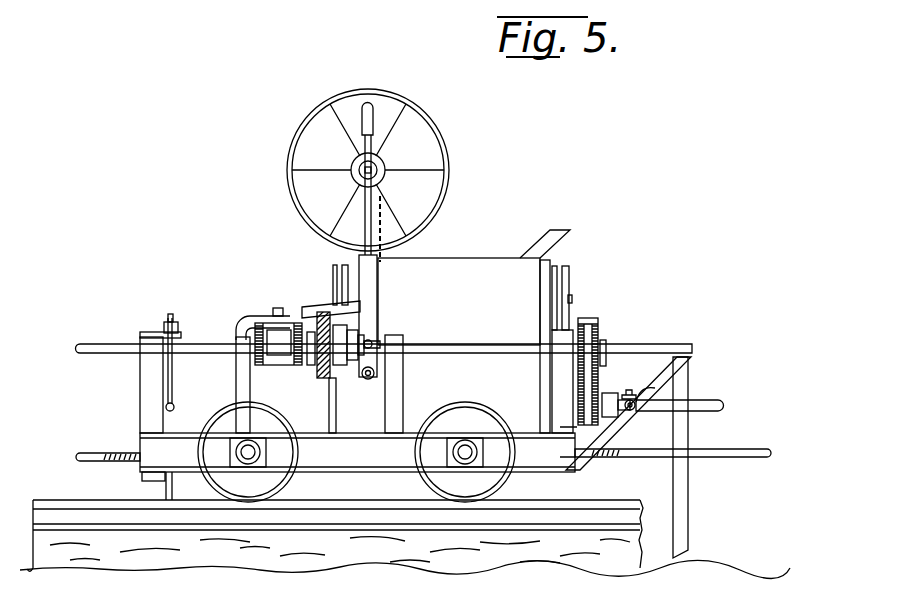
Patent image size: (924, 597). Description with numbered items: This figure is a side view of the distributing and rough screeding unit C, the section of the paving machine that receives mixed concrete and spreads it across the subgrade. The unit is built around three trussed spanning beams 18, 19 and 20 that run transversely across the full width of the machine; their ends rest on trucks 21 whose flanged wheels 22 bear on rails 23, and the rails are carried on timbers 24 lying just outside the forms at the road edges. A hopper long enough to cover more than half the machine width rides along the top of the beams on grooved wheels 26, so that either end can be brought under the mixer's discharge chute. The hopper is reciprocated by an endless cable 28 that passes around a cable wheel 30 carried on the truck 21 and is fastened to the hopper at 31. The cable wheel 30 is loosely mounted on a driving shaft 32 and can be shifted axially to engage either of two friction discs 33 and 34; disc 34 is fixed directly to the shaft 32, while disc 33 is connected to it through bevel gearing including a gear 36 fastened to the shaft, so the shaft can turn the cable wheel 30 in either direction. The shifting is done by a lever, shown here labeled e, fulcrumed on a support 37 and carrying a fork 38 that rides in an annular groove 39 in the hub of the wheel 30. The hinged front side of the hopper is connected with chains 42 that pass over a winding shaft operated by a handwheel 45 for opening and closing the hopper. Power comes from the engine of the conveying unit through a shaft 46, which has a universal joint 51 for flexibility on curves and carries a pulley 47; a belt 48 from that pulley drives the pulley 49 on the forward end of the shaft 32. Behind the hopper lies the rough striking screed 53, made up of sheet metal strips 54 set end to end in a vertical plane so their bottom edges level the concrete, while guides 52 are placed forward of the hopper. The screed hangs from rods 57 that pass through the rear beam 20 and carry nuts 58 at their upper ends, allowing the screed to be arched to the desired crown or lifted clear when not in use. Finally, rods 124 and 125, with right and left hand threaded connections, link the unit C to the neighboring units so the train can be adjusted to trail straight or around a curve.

The trussed spanning beam 18 is at (550, 381).
The middle trussed spanning beam 19 is at (334, 404).
The rear trussed spanning beam 20 is at (140, 390).
The truck 21 is at (330, 272).
The flanged wheel 22 is at (356, 452).
The rail 23 is at (343, 506).
The timber 24 is at (545, 540).
The grooved wheel 26 is at (566, 278).
The endless cable 28 is at (319, 318).
The cable wheel 30 is at (318, 371).
The cable fastening 31 is at (346, 312).
The driving shaft 32 is at (486, 345).
The friction disc 33 is at (308, 364).
The friction disc 34 is at (355, 365).
The gear 36 is at (265, 366).
The support 37 is at (376, 373).
The fork 38 is at (381, 344).
The annular groove 39 is at (357, 337).
The chain 42 is at (383, 226).
The handwheel 45 is at (441, 134).
The shaft 46 is at (694, 404).
The pulley 47 is at (604, 395).
The belt 48 is at (590, 382).
The pulley 49 is at (597, 322).
The universal joint 51 is at (636, 393).
The guide 52 is at (700, 457).
The rough striking screed 53 is at (161, 485).
The sheet metal strip 54 is at (186, 486).
The rod 57 is at (173, 392).
The nut 58 is at (178, 330).
The rod 124 is at (710, 453).
The rod 125 is at (108, 467).
The distributing and rough screeding unit C is at (474, 259).
The lever e is at (374, 280).